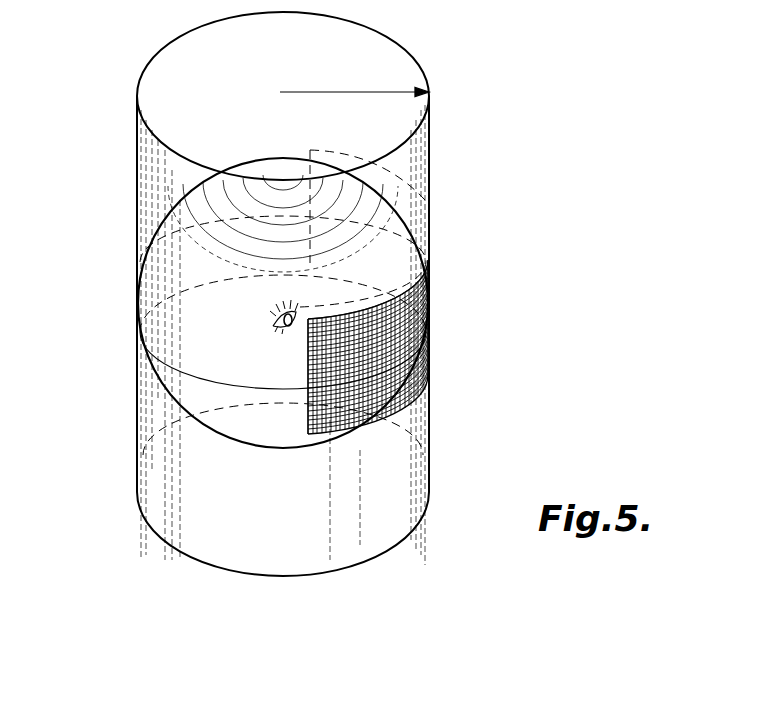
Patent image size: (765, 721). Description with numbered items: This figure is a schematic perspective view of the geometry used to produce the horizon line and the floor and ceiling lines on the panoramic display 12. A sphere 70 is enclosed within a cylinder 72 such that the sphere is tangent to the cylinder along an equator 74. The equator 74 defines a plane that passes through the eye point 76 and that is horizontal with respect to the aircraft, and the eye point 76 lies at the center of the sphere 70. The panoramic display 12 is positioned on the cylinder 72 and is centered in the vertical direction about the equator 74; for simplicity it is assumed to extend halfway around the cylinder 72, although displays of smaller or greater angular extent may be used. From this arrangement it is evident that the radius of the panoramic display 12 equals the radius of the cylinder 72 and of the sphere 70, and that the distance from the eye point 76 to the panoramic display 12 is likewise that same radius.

The panoramic display 12 is at (433, 301).
The sphere 70 is at (185, 198).
The cylinder 72 is at (137, 131).
The equator 74 is at (195, 377).
The eye point 76 is at (273, 325).